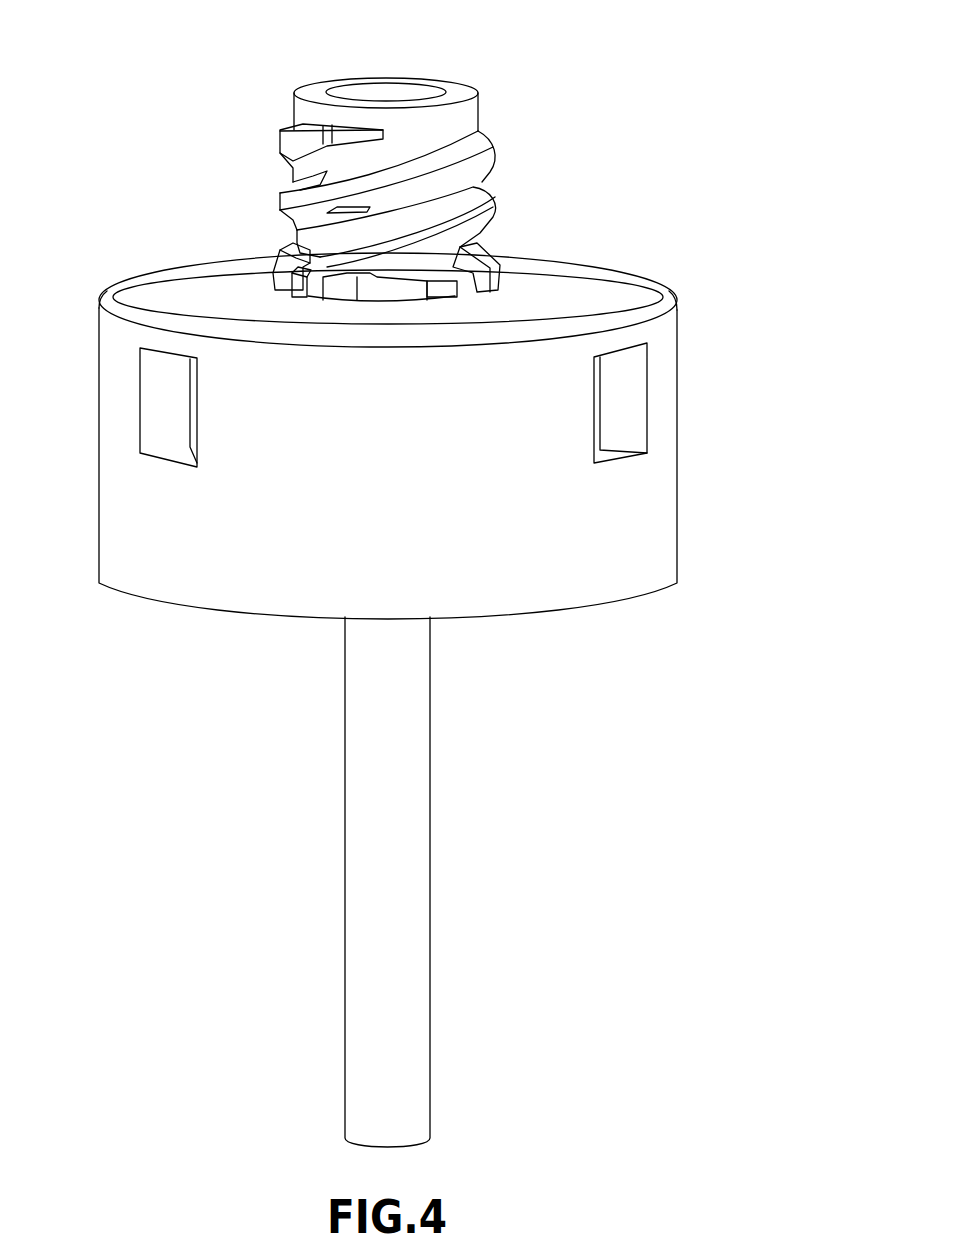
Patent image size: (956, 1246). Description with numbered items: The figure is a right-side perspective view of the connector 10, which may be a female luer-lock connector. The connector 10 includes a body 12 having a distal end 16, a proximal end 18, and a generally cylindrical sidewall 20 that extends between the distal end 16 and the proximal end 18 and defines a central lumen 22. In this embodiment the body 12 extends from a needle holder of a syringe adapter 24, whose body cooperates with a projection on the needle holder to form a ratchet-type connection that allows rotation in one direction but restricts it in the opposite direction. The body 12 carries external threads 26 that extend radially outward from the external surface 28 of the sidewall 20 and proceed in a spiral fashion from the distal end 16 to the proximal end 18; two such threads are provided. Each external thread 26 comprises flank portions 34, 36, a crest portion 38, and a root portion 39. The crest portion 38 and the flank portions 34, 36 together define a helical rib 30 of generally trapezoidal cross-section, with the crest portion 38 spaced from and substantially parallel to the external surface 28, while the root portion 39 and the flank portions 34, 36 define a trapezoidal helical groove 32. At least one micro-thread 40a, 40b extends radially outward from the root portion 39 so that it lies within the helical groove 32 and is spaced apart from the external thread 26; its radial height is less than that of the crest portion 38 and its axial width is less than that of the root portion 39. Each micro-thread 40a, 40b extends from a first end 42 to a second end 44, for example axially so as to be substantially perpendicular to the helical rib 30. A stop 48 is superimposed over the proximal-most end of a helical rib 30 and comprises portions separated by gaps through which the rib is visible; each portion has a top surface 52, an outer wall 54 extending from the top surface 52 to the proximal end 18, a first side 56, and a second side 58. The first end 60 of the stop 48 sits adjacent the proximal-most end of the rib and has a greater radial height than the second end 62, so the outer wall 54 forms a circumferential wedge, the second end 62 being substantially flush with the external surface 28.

The connector 10 is at (668, 63).
The body 12 is at (423, 67).
The distal end 16 is at (456, 88).
The proximal end 18 is at (404, 302).
The sidewall 20 is at (480, 110).
The central lumen 22 is at (388, 92).
The syringe adapter 24 is at (677, 378).
The external threads 26 is at (297, 200).
The external surface 28 is at (287, 102).
The helical rib 30 is at (303, 209).
The helical groove 32 is at (293, 245).
The flank portion 34 is at (497, 146).
The flank portion 36 is at (398, 210).
The crest portion 38 is at (495, 168).
The root portion 39 is at (448, 210).
The micro-thread 40a is at (287, 180).
The micro-thread 40b is at (494, 188).
The first end 42 is at (330, 152).
The second end 44 is at (448, 196).
The stop 48 is at (278, 292).
The top surface 52 is at (275, 262).
The outer wall 54 is at (345, 300).
The first side 56 is at (472, 292).
The second side 58 is at (326, 300).
The first end 60 is at (453, 269).
The second end 62 is at (296, 298).